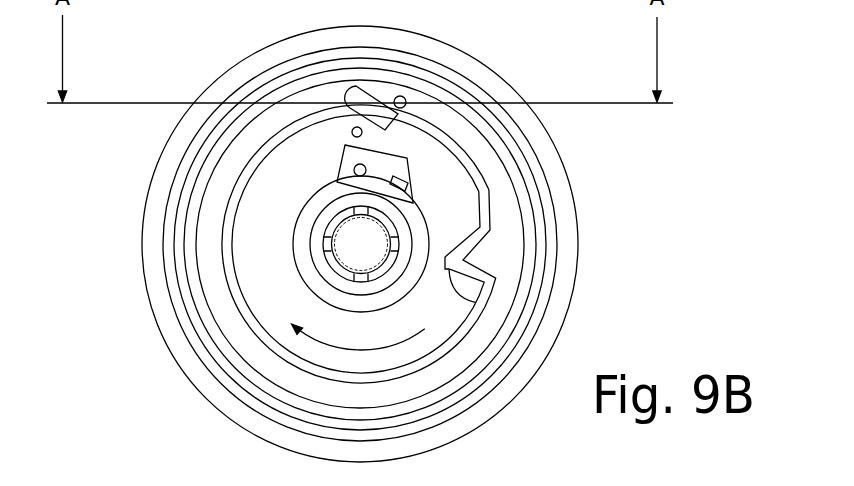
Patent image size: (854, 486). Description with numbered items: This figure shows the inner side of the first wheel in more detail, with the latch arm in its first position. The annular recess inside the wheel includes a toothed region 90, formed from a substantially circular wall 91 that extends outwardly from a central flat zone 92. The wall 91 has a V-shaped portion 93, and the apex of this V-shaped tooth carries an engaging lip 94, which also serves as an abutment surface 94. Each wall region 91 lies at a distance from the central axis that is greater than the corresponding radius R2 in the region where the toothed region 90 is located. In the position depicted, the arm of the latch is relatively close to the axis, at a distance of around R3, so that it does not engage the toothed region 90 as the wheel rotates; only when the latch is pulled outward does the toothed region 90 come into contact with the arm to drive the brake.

The toothed region 90 is at (495, 255).
The substantially circular wall 91 is at (230, 215).
The central flat zone 92 is at (263, 268).
The V-shaped portion 93 is at (457, 231).
The engaging lip 94 is at (460, 293).
The radius in the toothed region R2 is at (361, 244).
The distance of the arm from the axis R3 is at (402, 187).